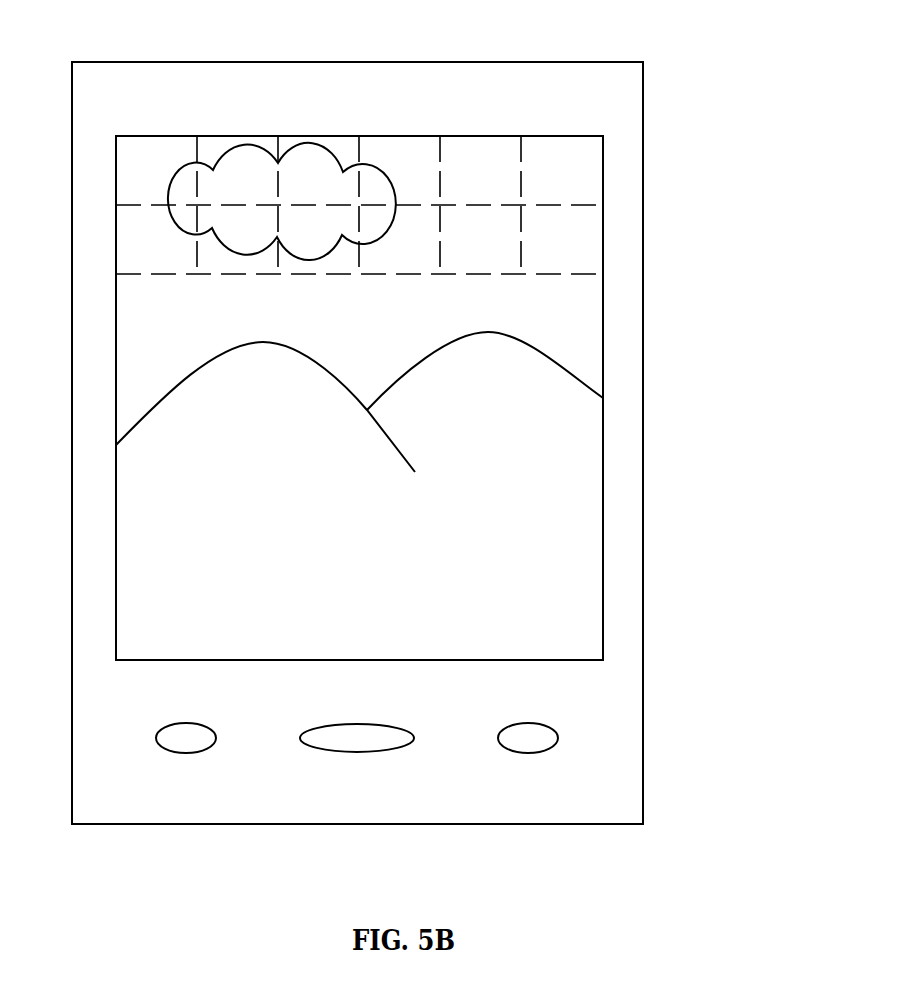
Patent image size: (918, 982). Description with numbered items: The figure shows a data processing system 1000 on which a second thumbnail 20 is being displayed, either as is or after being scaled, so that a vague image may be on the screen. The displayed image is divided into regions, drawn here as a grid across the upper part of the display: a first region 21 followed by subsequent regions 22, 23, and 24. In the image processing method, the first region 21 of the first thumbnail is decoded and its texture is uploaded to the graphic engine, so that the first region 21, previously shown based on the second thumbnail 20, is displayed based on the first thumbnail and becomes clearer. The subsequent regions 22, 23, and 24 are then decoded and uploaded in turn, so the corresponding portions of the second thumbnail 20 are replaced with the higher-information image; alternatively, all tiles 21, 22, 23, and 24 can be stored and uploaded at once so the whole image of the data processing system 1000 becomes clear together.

The data processing system 1000 is at (530, 62).
The second thumbnail 20 is at (603, 340).
The first region 21 is at (135, 147).
The subsequent region 22 is at (215, 147).
The subsequent region 23 is at (297, 147).
The subsequent region 24 is at (378, 147).